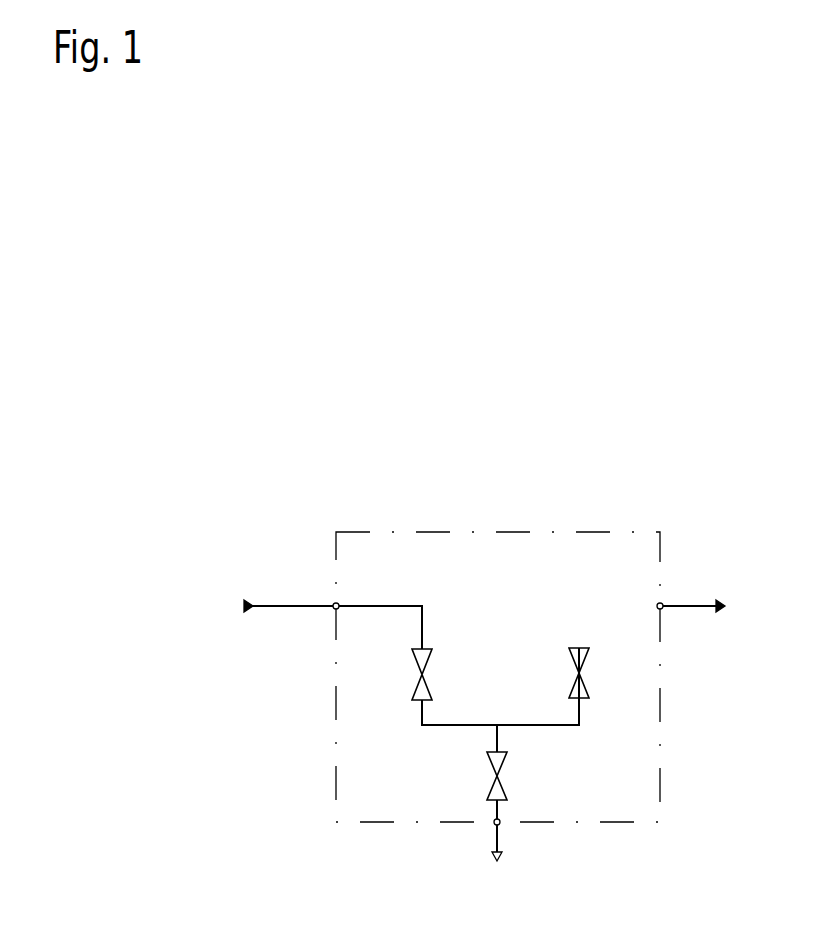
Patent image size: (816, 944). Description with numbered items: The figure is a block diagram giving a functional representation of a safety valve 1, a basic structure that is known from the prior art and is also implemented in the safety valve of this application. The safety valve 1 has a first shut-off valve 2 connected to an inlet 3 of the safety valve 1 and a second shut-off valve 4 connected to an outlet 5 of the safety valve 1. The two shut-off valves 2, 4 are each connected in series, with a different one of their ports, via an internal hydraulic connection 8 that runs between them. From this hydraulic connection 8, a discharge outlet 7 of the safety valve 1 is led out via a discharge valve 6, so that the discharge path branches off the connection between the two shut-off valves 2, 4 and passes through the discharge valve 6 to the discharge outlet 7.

The safety valve 1 is at (452, 884).
The first shut-off valve 2 is at (412, 690).
The inlet 3 is at (334, 604).
The second shut-off valve 4 is at (583, 672).
The outlet 5 is at (662, 604).
The discharge valve 6 is at (491, 790).
The discharge outlet 7 is at (499, 824).
The internal hydraulic connection 8 is at (406, 774).